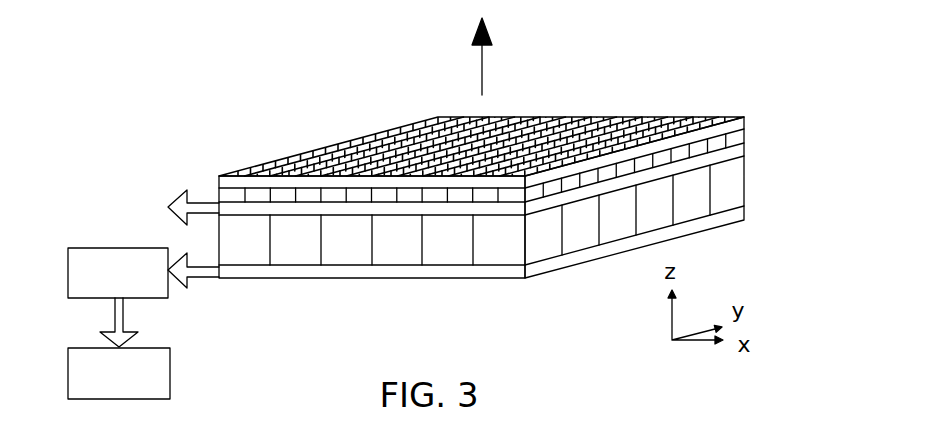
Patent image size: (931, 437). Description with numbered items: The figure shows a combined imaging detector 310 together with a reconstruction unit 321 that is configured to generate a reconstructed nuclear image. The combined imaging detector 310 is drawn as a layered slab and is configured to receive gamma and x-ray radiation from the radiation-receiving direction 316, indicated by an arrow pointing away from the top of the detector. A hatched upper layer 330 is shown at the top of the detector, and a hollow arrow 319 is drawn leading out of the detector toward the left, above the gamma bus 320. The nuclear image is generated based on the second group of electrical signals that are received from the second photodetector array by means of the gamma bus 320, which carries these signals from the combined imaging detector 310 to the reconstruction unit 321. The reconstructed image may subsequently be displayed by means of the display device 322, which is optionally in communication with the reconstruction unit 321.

The combined imaging detector 310 is at (521, 164).
The radiation-receiving direction 316 is at (505, 56).
The first input signal arrow 319 is at (177, 197).
The gamma bus 320 is at (173, 257).
The reconstruction unit 321 is at (118, 273).
The display device 322 is at (119, 373).
The top emitter layer 330 is at (322, 105).